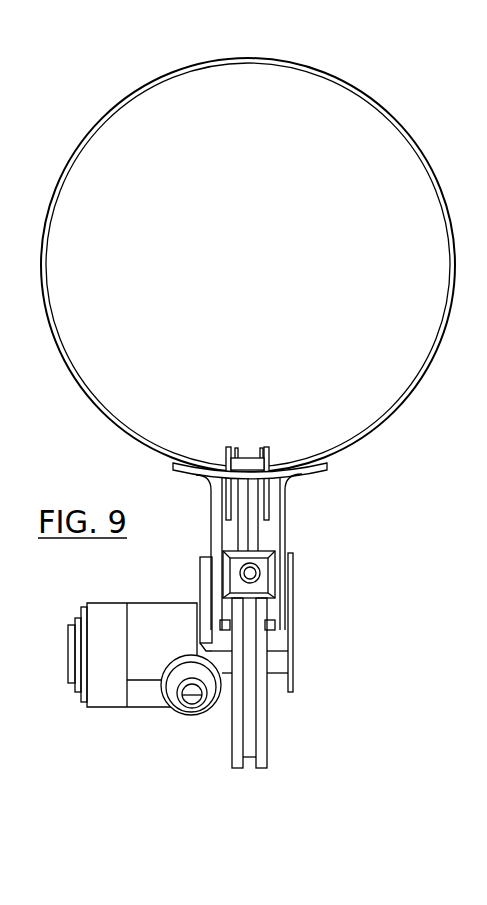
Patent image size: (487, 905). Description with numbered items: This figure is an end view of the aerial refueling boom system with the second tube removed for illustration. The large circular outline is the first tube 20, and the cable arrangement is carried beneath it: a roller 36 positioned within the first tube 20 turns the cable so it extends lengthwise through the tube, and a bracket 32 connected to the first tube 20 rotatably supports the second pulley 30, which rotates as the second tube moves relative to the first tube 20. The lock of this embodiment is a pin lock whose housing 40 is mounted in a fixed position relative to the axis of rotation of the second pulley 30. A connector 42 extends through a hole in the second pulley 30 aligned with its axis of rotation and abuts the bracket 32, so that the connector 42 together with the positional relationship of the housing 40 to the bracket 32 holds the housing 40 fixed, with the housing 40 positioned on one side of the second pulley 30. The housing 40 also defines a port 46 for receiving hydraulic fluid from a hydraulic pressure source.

The first tube 20 is at (385, 112).
The second pulley 30 is at (255, 643).
The bracket 32 is at (211, 529).
The roller 36 is at (250, 462).
The housing 40 is at (113, 707).
The connector 42 is at (293, 573).
The port 46 is at (190, 700).